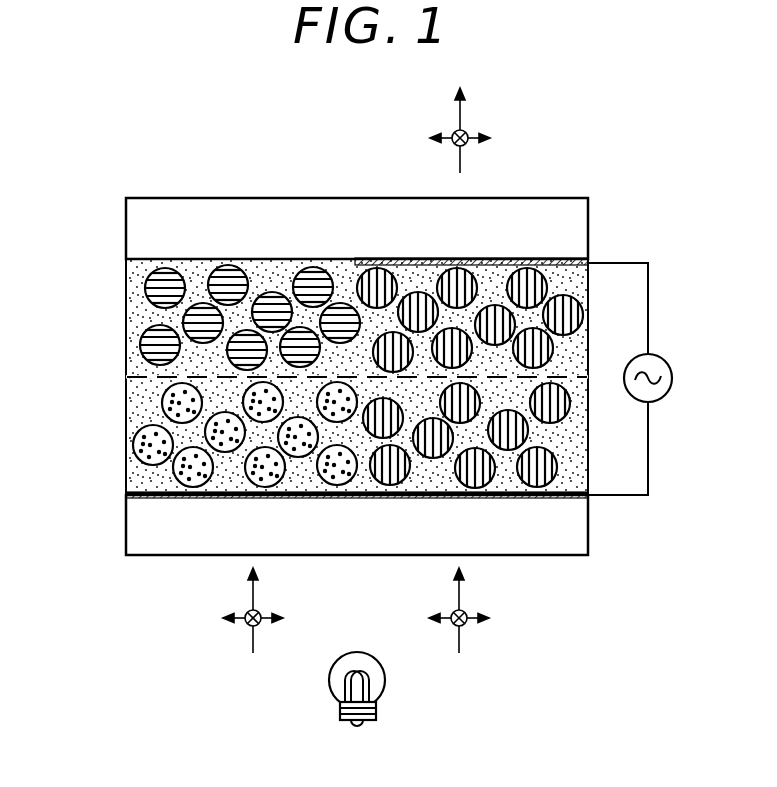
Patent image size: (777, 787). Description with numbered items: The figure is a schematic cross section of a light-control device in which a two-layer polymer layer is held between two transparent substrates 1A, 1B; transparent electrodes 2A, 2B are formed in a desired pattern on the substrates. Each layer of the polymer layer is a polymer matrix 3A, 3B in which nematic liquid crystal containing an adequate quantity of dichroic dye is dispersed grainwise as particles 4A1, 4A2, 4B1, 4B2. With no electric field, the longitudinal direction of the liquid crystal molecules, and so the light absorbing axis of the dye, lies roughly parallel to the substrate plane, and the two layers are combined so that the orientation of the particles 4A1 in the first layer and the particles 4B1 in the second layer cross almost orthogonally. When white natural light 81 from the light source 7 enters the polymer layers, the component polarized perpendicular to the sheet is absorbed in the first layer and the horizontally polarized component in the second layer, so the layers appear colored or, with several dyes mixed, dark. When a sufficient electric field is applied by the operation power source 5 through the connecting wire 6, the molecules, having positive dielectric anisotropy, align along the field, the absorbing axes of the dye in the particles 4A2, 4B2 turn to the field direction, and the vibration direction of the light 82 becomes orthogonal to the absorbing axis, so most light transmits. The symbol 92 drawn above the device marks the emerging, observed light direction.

The transparent substrate 1A is at (578, 537).
The transparent substrate 1B is at (575, 221).
The transparent electrode 2A is at (576, 490).
The transparent electrode 2B is at (568, 262).
The polymer matrix 3A is at (143, 420).
The polymer matrix 3B is at (142, 303).
The liquid crystal particles 4A1 is at (168, 400).
The liquid crystal particles with dichroic dye 4A2 is at (553, 465).
The liquid crystal particles 4B1 is at (150, 287).
The liquid crystal particles with dichroic dye 4B2 is at (553, 347).
The operation power source 5 is at (672, 372).
The connecting wire 6 is at (648, 263).
The light source 7 is at (385, 693).
The white natural light 81 is at (244, 603).
The light 82 is at (470, 603).
The observation direction 92 is at (468, 125).